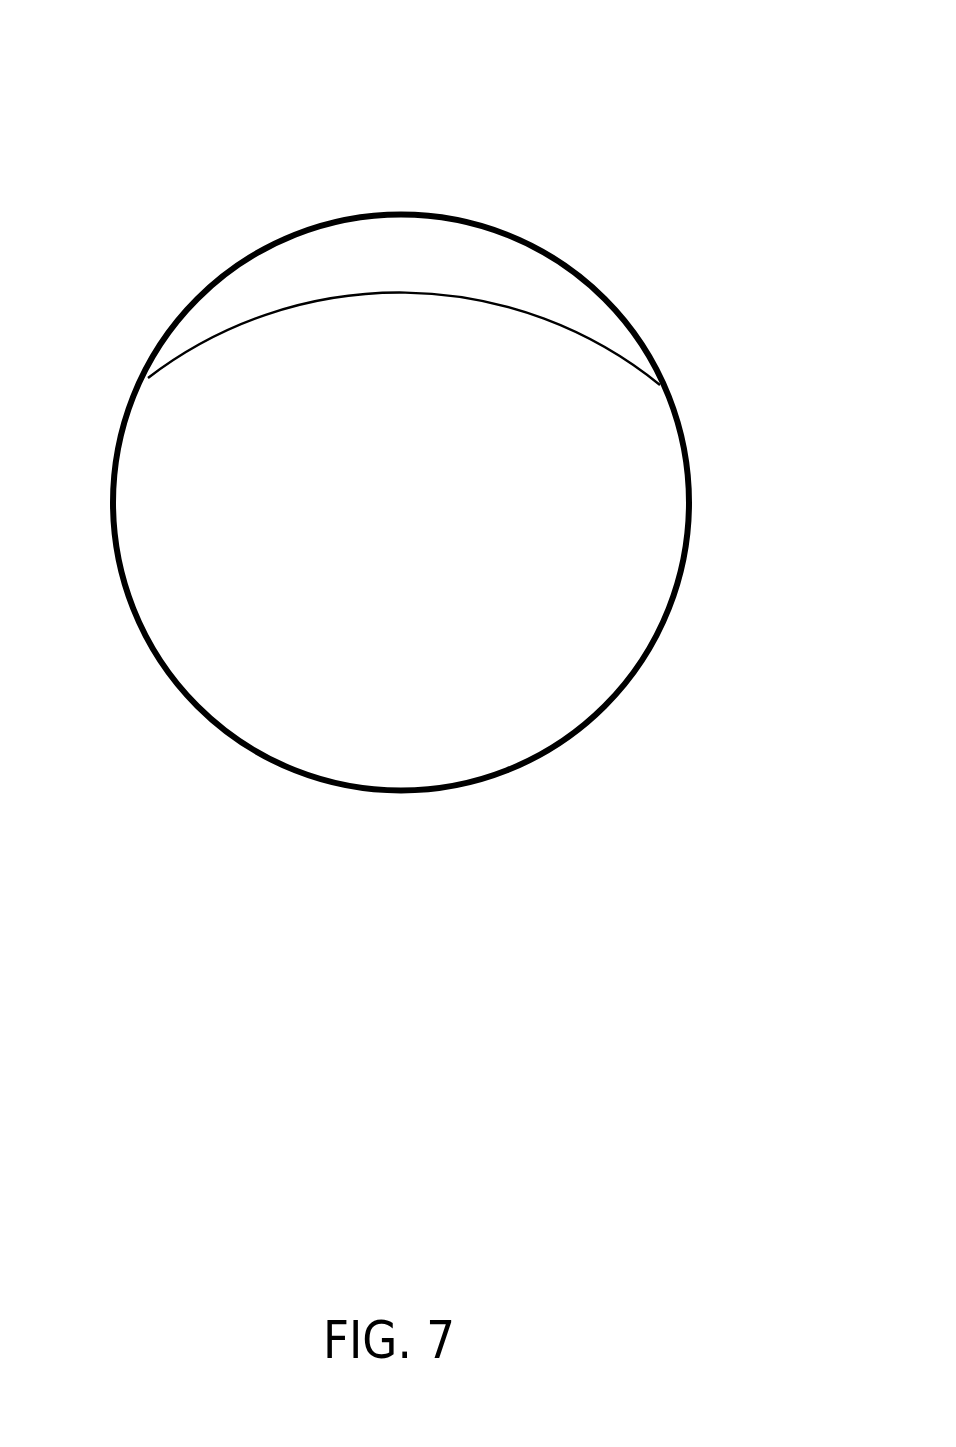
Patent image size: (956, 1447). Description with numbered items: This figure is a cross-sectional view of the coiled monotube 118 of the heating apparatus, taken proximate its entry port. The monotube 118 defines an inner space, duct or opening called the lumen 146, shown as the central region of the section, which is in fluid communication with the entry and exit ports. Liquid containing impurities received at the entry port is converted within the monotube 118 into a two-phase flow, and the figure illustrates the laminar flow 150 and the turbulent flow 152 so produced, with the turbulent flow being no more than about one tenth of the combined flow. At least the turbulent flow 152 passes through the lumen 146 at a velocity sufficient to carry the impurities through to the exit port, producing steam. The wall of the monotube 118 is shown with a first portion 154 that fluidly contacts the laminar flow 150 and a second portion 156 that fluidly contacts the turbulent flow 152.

The monotube 118 is at (325, 152).
The lumen 146 is at (337, 393).
The laminar flow 150 is at (357, 757).
The turbulent flow 152 is at (403, 255).
The first portion 154 is at (185, 694).
The second portion 156 is at (433, 217).